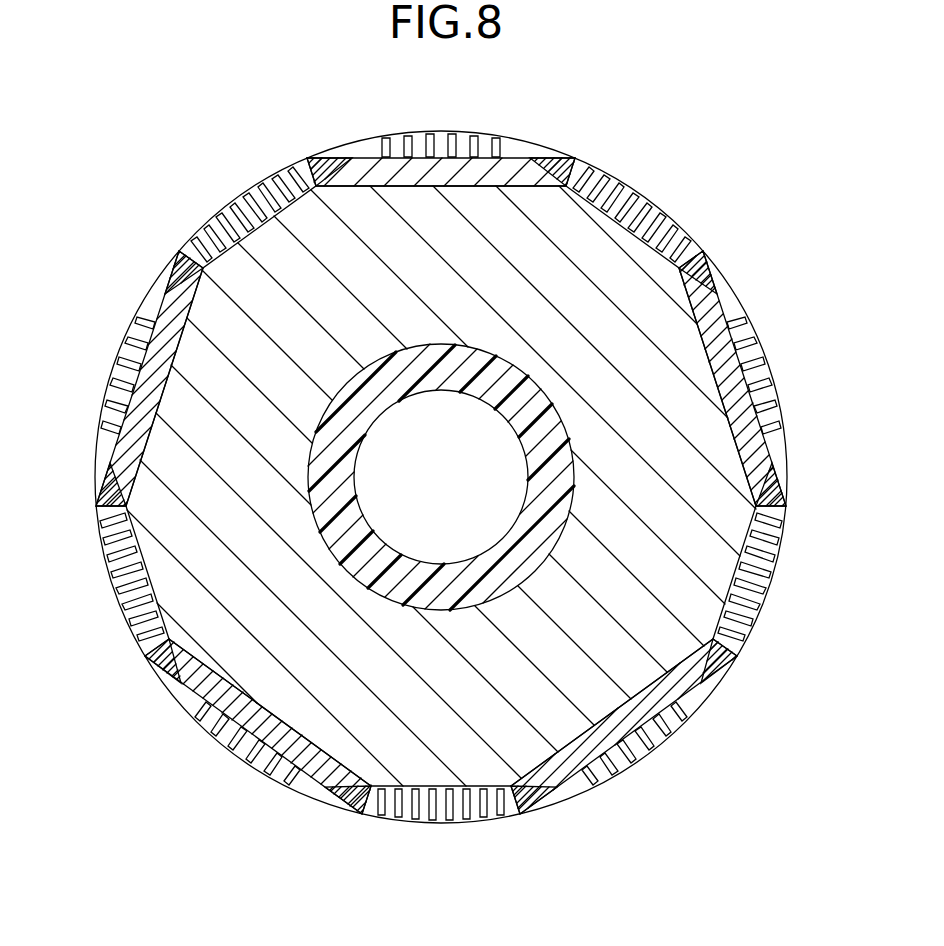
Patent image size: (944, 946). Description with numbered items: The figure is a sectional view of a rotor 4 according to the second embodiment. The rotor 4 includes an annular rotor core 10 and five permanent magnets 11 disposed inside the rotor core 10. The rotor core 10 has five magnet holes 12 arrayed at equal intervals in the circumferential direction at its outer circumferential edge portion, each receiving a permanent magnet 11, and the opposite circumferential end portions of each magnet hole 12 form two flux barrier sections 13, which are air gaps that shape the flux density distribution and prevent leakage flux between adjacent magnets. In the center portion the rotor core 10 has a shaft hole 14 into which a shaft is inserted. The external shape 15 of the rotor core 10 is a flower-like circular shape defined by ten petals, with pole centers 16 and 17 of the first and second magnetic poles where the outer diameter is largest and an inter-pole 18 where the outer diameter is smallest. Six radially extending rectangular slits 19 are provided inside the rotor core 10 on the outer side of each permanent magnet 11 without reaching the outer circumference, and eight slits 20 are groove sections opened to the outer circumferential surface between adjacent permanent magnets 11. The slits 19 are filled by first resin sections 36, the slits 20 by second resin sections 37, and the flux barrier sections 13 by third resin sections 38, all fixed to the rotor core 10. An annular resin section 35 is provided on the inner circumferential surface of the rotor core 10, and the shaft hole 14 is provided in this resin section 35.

The rotor 4 is at (680, 136).
The rotor core 10 is at (182, 586).
The permanent magnet 11 is at (510, 166).
The magnet hole 12 is at (360, 190).
The flux barrier section 13 is at (166, 276).
The shaft hole 14 is at (520, 508).
The external shape 15 is at (783, 441).
The pole center 16 is at (771, 367).
The pole center 17 is at (780, 588).
The inter-pole 18 is at (776, 498).
The slit 19 is at (467, 129).
The slit 20 is at (672, 250).
The annular resin section 35 is at (425, 588).
The resin section 36 is at (118, 346).
The resin section 37 is at (214, 210).
The resin section 38 is at (153, 690).